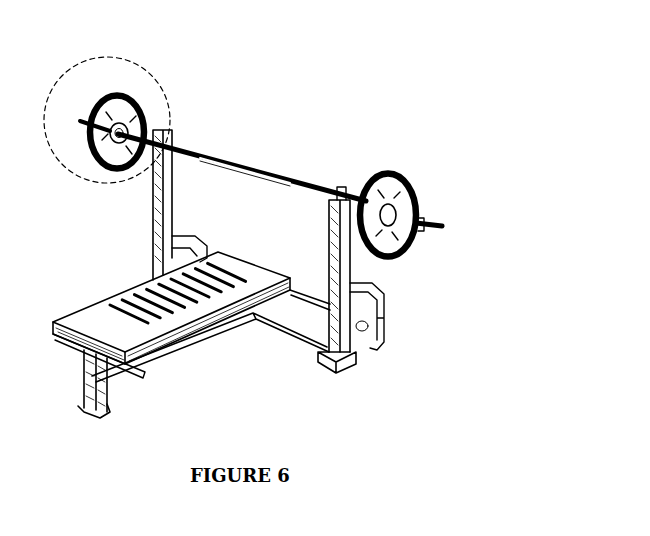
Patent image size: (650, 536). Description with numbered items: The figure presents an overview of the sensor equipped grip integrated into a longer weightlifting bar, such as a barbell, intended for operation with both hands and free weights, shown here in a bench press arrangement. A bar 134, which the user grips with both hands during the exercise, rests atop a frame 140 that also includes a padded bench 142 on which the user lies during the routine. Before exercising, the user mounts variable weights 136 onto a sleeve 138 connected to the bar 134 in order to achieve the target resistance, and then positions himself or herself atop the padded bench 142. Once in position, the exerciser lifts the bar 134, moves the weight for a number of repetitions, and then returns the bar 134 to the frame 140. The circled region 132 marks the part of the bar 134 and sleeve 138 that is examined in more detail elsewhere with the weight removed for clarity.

The circled region 132 is at (168, 93).
The bar 134 is at (253, 170).
The variable weights 136 is at (418, 195).
The sleeve 138 is at (442, 225).
The frame 140 is at (347, 283).
The padded bench 142 is at (161, 360).